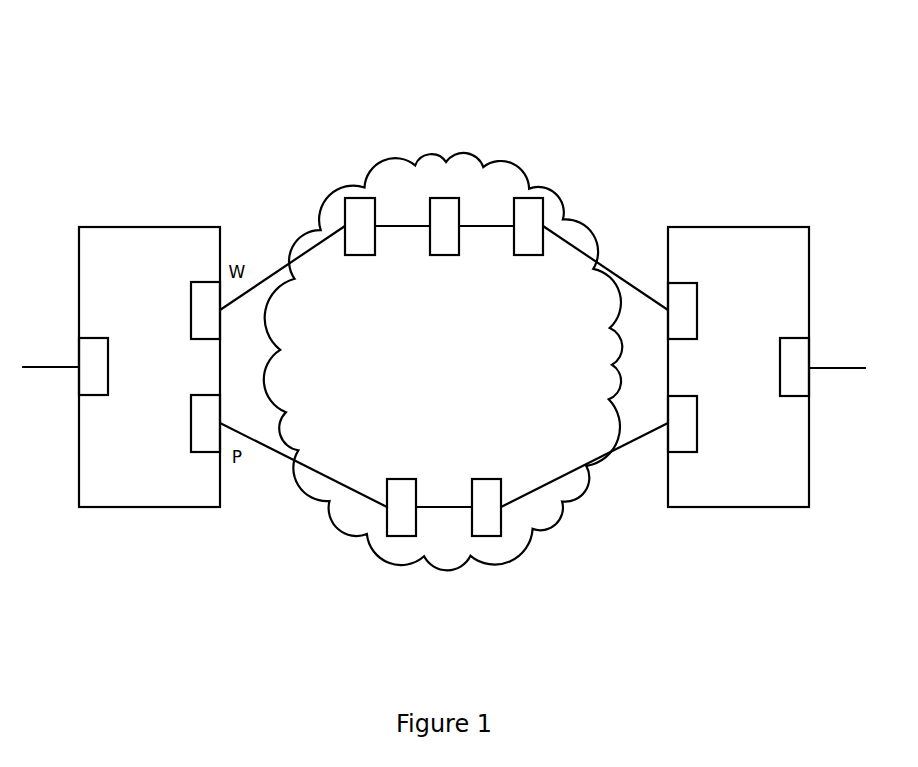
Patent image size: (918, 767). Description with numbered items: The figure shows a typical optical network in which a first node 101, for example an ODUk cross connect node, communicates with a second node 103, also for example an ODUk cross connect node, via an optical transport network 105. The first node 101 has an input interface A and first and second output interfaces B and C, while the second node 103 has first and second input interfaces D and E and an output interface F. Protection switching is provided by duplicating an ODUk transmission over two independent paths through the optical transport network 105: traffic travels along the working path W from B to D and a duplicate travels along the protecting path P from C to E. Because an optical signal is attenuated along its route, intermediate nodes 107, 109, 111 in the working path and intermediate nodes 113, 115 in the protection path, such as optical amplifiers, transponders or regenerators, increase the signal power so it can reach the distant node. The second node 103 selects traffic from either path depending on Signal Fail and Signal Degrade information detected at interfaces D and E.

The first node 101 is at (147, 245).
The second node 103 is at (743, 245).
The optical transport network 105 is at (410, 142).
The intermediate node 107 is at (357, 198).
The intermediate node 109 is at (443, 198).
The intermediate node 111 is at (529, 198).
The intermediate node 113 is at (396, 536).
The intermediate node 115 is at (487, 536).